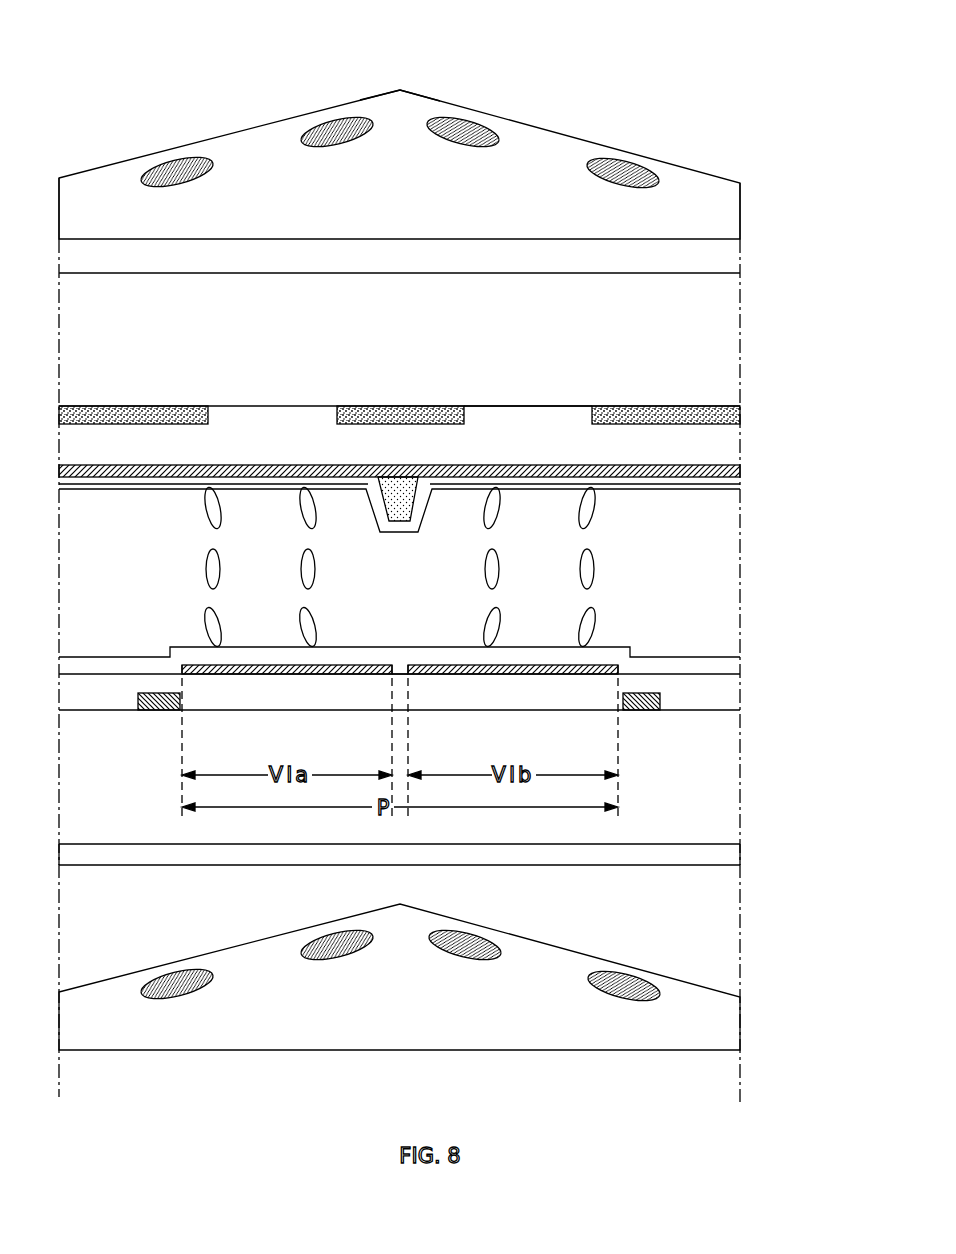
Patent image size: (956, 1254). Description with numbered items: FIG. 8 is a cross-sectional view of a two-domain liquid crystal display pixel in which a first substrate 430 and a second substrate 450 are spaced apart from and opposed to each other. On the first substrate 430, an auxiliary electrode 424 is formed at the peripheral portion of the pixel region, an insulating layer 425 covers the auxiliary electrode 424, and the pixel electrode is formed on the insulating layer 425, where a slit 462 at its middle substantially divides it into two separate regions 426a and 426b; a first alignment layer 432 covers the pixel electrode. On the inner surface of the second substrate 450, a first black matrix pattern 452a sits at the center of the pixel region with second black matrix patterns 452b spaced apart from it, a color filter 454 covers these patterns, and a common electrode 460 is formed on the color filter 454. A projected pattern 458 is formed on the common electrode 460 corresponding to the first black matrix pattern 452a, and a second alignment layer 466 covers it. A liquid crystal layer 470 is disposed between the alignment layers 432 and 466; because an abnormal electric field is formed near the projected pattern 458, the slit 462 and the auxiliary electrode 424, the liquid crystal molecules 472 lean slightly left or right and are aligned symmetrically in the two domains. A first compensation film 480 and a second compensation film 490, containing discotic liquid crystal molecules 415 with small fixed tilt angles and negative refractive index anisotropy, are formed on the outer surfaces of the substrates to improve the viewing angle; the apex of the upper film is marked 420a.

The discotic liquid crystal molecules 415 is at (194, 158).
The polarizer apex / ridge 420a is at (400, 90).
The second compensation film 490 is at (740, 183).
The second substrate 450 is at (87, 346).
The first black matrix pattern 452a is at (407, 406).
The second black matrix patterns 452b is at (168, 406).
The color filter 454 is at (524, 424).
The common electrode 460 is at (240, 465).
The second alignment layer 466 is at (302, 489).
The projected pattern 458 is at (400, 522).
The liquid crystal molecules 472 is at (592, 570).
The liquid crystal layer 470 is at (740, 484).
The first alignment layer 432 is at (118, 657).
The first region of pixel electrode 426a is at (258, 665).
The second region of pixel electrode 426b is at (535, 665).
The slit 462 is at (402, 668).
The insulating layer 425 is at (703, 688).
The auxiliary electrode 424 is at (155, 710).
The first substrate 430 is at (85, 796).
The first compensation film 480 is at (740, 997).